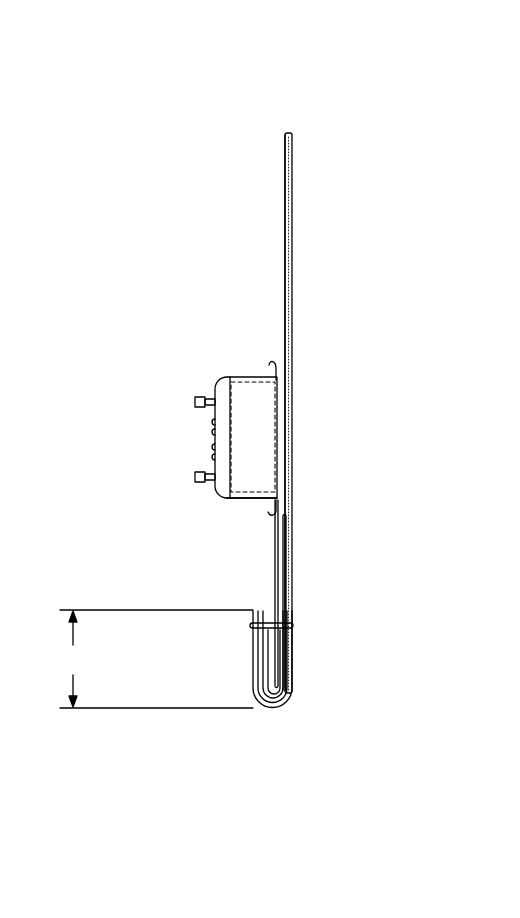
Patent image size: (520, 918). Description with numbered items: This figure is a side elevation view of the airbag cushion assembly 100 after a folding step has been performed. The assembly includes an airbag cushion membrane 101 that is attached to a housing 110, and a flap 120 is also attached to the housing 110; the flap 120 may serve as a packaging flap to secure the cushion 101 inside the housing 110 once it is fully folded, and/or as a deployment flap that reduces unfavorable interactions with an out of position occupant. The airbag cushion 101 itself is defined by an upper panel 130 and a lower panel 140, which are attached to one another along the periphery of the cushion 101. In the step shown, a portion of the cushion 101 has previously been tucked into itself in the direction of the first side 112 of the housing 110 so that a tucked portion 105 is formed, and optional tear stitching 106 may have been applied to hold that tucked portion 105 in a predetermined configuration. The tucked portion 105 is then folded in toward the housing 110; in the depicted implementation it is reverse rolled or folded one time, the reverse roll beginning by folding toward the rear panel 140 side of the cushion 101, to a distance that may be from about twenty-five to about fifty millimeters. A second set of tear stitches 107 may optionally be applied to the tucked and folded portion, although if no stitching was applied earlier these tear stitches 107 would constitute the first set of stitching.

The airbag cushion assembly 100 is at (380, 124).
The airbag cushion membrane 101 is at (328, 318).
The tucked portion 105 is at (288, 570).
The tear stitching 106 is at (276, 695).
The second set of tear stitches 107 is at (294, 626).
The housing 110 is at (207, 367).
The first side 112 is at (241, 499).
The flap 120 is at (253, 663).
The upper panel 130 is at (293, 218).
The lower panel 140 is at (283, 172).